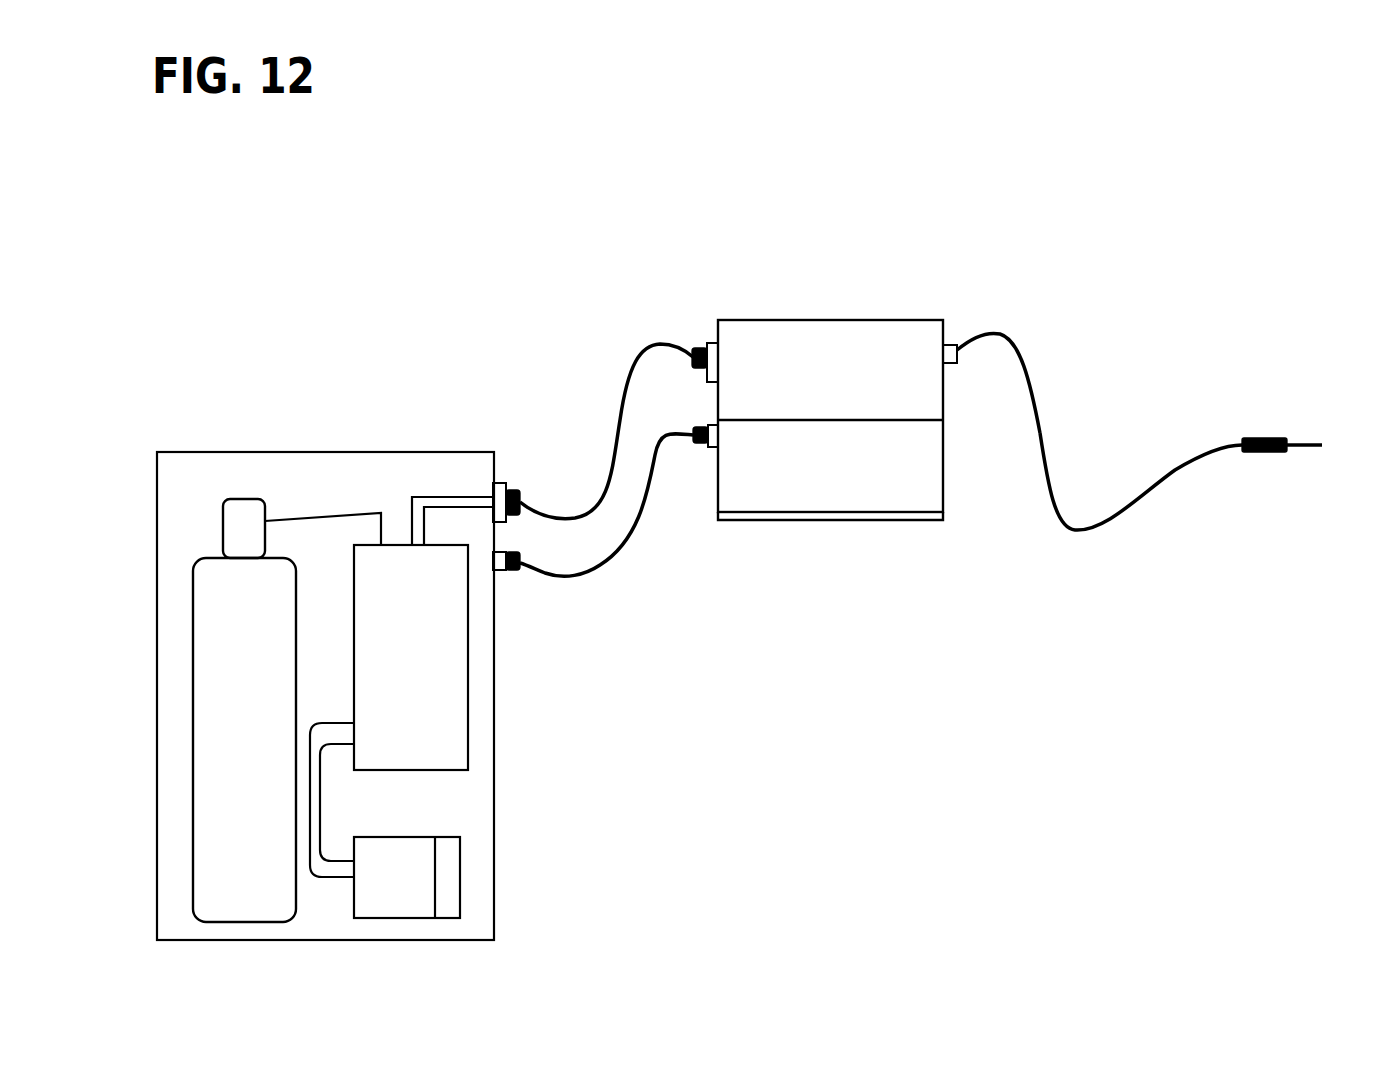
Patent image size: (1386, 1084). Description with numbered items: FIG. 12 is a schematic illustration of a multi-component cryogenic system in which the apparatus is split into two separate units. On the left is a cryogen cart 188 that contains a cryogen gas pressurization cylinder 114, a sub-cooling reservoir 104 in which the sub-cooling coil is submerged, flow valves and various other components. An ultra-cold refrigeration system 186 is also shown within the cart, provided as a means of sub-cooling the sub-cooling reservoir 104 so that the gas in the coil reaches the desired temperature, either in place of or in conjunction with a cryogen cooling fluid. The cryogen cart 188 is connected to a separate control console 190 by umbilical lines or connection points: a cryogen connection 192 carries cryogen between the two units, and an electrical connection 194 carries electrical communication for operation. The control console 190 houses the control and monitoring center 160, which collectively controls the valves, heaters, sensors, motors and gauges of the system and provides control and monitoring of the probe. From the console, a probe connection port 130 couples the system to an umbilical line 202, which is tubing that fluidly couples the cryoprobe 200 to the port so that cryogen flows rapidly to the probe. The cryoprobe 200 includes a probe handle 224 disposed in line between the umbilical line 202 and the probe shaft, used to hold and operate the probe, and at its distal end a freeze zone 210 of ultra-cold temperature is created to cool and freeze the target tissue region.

The cryogen cart 188 is at (174, 486).
The pressurized cylinder 114 is at (218, 705).
The sub-cooling reservoir 104 is at (390, 679).
The ultra-cold refrigeration system 186 is at (374, 889).
The control console 190 is at (795, 317).
The control and monitoring center 160 is at (811, 480).
The cryogen connection 192 is at (622, 378).
The electrical connection 194 is at (608, 560).
The probe connection port 130 is at (953, 343).
The umbilical line 202 is at (1090, 537).
The cryoprobe 200 is at (1281, 453).
The probe handle 224 is at (1258, 438).
The freeze zone 210 is at (1312, 447).